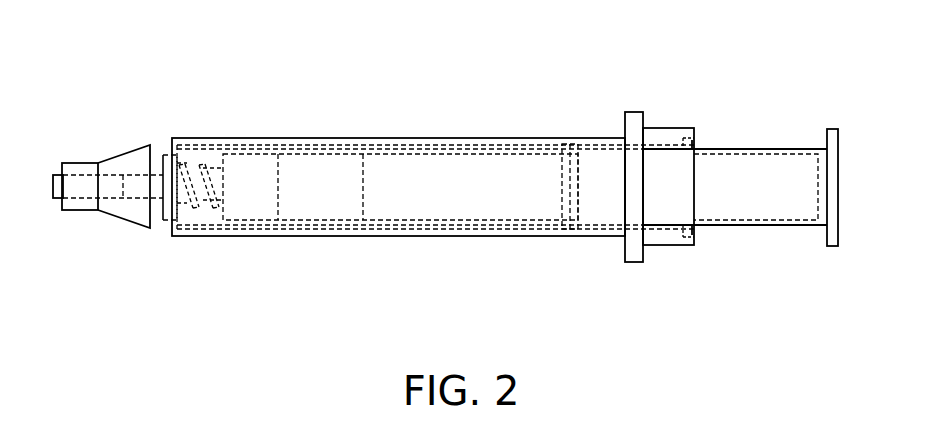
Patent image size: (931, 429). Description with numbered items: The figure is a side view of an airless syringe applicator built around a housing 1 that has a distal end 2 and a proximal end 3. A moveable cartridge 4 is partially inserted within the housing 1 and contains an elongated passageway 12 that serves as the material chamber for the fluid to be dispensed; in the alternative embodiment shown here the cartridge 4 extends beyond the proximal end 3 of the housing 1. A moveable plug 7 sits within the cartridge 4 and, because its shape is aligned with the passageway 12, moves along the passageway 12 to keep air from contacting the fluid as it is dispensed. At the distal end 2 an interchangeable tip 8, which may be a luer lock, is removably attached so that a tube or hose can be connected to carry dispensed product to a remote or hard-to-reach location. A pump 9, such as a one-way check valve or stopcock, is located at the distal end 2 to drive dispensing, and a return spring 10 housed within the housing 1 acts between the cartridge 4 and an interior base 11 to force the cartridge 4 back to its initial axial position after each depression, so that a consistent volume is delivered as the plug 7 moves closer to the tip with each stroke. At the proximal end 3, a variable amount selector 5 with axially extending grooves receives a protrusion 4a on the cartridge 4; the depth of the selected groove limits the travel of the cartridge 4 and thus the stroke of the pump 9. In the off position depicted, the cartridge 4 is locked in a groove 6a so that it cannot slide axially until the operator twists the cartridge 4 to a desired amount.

The housing 1 is at (483, 238).
The distal end 2 is at (112, 158).
The proximal end 3 is at (634, 112).
The moveable cartridge 4 is at (778, 148).
The protrusion 4a is at (697, 143).
The variable amount selector 5 is at (680, 128).
The groove 6a is at (695, 128).
The moveable plug 7 is at (316, 205).
The interchangeable tip 8 is at (57, 202).
The pump 9 is at (213, 158).
The return spring 10 is at (193, 208).
The interior base 11 is at (190, 147).
The elongated passageway 12 is at (436, 168).